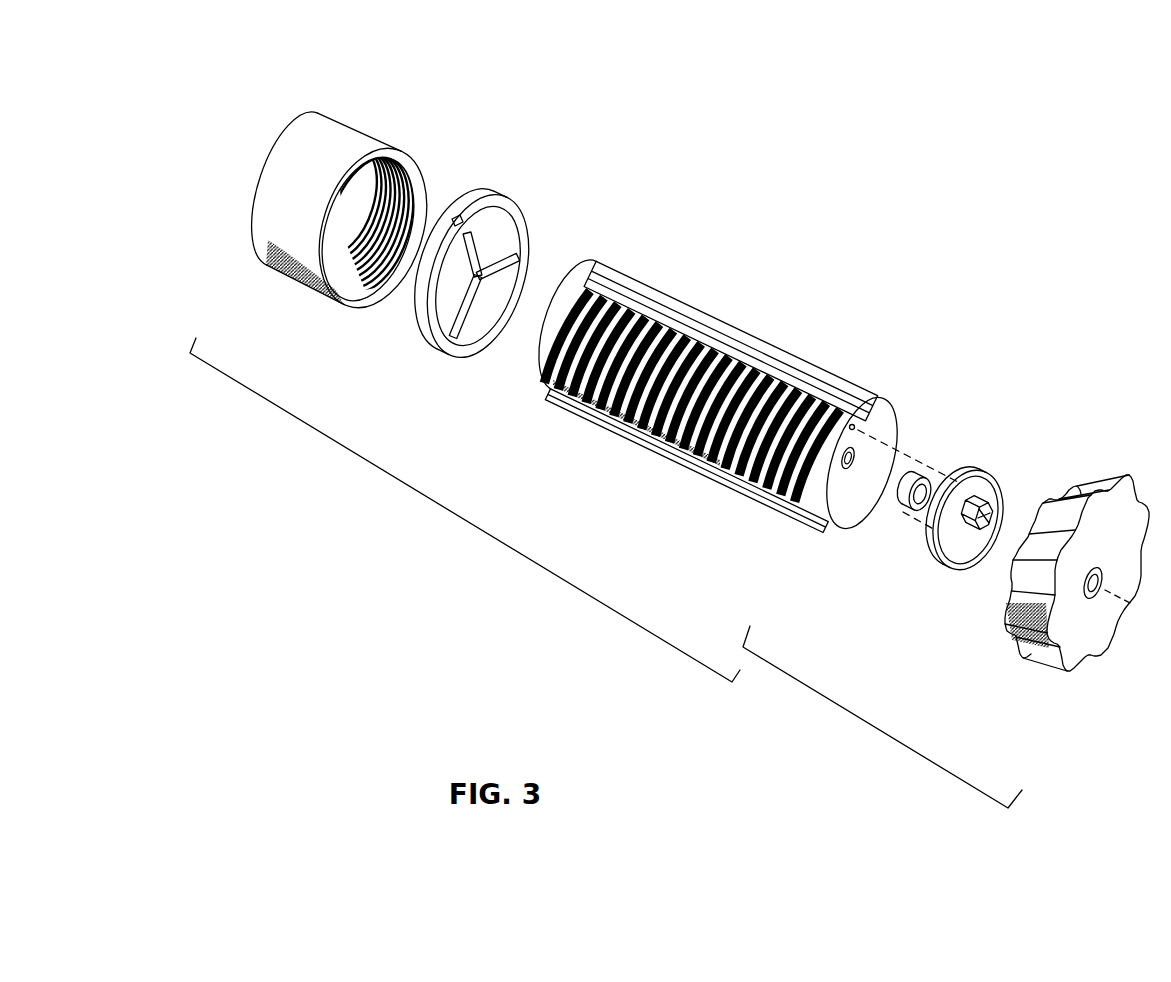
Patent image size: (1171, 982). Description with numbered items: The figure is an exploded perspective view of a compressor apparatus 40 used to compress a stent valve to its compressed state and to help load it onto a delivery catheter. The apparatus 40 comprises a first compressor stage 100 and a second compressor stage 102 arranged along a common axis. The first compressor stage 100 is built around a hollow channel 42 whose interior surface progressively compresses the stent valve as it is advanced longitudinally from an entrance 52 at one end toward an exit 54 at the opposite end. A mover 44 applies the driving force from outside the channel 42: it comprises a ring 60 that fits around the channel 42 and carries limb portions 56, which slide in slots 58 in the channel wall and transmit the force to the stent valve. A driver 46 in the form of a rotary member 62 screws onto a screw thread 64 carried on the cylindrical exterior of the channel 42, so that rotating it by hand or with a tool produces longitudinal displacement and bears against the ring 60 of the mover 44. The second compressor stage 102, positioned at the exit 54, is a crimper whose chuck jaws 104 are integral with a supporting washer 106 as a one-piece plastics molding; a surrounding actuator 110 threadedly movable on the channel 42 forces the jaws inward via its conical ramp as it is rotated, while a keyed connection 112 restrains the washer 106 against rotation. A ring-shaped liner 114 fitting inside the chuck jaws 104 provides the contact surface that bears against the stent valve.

The apparatus 40 is at (829, 165).
The hollow channel 42 is at (628, 265).
The mover 44 is at (503, 190).
The driver 46 is at (347, 122).
The entrance 52 is at (561, 282).
The exit 54 is at (880, 409).
The limb portions 56 is at (457, 300).
The slots 58 is at (677, 321).
The ring 60 is at (468, 203).
The rotary member 62 is at (335, 163).
The screw thread 64 is at (543, 358).
The first compressor stage 100 is at (461, 517).
The second compressor stage 102 is at (873, 726).
The chuck jaws 104 is at (960, 568).
The washer 106 is at (948, 540).
The actuator 110 is at (1032, 650).
The keyed connection 112 is at (960, 476).
The liner 114 is at (915, 472).